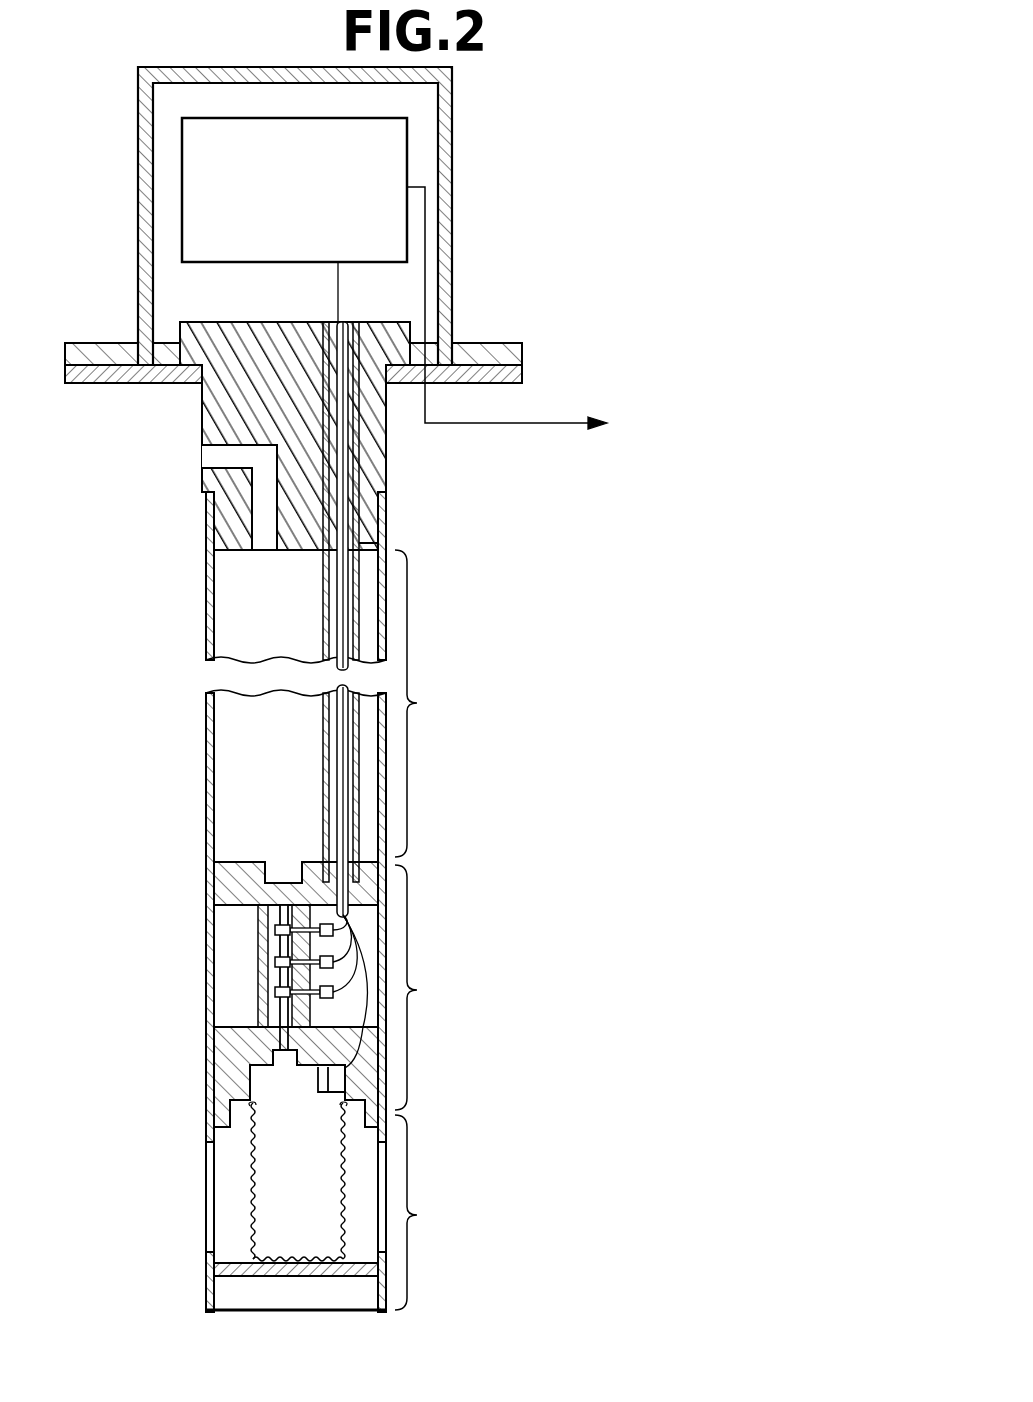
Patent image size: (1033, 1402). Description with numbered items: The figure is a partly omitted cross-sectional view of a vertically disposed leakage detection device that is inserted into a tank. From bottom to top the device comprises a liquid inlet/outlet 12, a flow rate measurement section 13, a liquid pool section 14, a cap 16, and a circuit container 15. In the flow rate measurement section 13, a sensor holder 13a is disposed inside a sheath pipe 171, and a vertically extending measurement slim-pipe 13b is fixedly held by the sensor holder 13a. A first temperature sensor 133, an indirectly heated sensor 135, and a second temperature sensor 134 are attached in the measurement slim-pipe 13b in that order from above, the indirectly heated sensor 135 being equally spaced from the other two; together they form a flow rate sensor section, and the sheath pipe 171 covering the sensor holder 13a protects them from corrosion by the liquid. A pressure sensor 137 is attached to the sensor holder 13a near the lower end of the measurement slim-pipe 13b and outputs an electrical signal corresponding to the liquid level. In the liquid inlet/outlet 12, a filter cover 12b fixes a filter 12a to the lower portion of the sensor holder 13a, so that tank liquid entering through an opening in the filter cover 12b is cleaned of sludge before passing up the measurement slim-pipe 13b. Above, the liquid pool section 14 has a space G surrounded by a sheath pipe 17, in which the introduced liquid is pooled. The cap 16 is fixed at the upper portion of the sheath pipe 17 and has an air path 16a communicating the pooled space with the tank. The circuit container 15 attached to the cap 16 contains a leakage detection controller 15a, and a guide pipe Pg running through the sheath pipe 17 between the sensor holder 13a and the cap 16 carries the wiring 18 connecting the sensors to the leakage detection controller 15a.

The circuit container 15 is at (453, 165).
The leakage detection controller 15a is at (182, 187).
The cap 16 is at (383, 467).
The air path 16a is at (215, 454).
The wiring 18 is at (340, 577).
The guide pipe Pg is at (323, 630).
The liquid pool section 14 is at (427, 703).
The sheath pipe 17 is at (212, 737).
The space G is at (238, 786).
The sensor holder 13a is at (228, 882).
The measurement slim-pipe 13b is at (275, 916).
The first temperature sensor 133 is at (273, 933).
The indirectly heated sensor 135 is at (273, 965).
The second temperature sensor 134 is at (275, 995).
The sheath pipe 171 is at (207, 1092).
The pressure sensor 137 is at (318, 1072).
The filter 12a is at (248, 1170).
The filter cover 12b is at (216, 1270).
The flow rate measurement section 13 is at (427, 987).
The liquid inlet/outlet 12 is at (427, 1212).